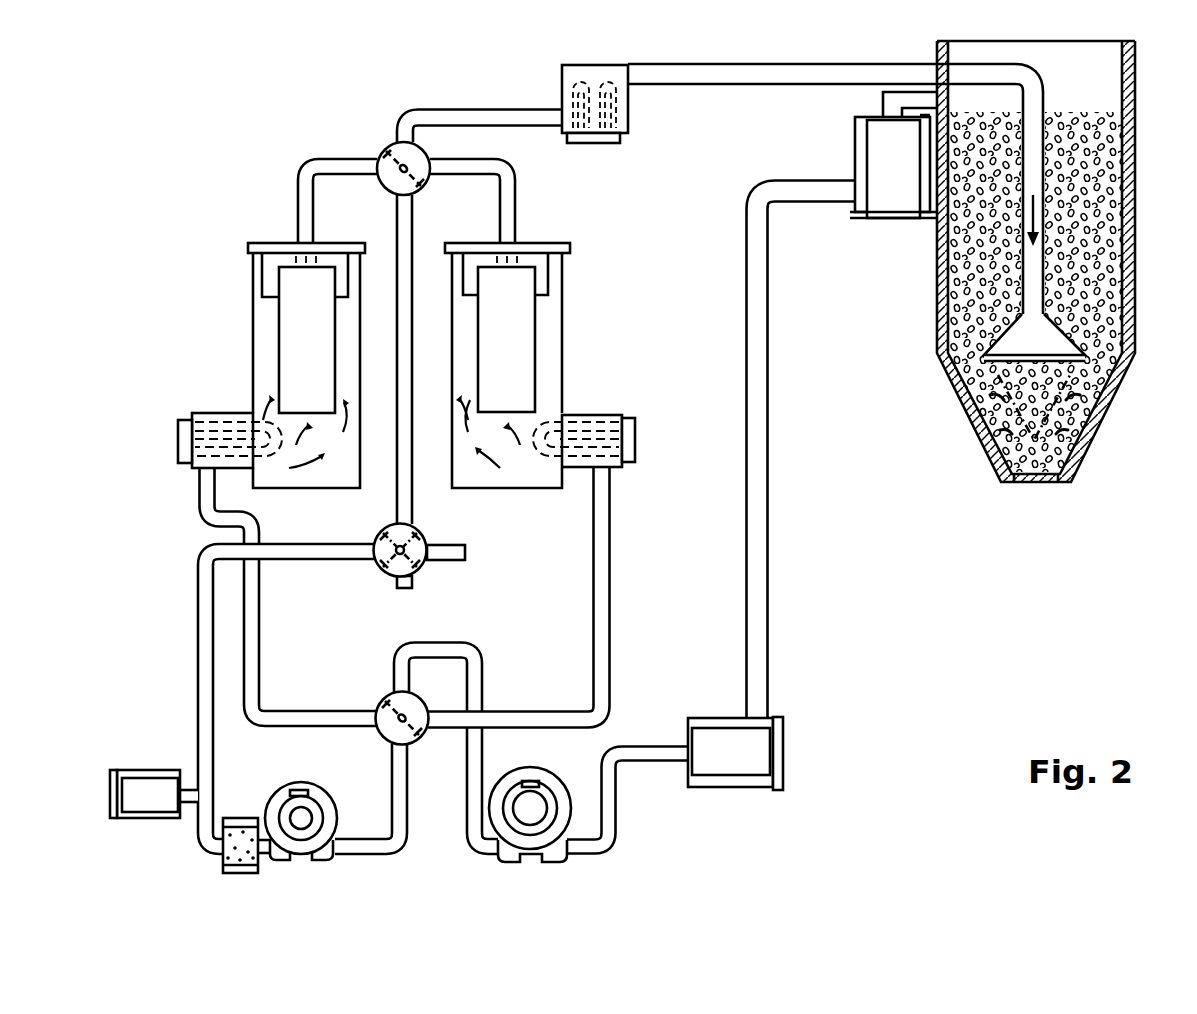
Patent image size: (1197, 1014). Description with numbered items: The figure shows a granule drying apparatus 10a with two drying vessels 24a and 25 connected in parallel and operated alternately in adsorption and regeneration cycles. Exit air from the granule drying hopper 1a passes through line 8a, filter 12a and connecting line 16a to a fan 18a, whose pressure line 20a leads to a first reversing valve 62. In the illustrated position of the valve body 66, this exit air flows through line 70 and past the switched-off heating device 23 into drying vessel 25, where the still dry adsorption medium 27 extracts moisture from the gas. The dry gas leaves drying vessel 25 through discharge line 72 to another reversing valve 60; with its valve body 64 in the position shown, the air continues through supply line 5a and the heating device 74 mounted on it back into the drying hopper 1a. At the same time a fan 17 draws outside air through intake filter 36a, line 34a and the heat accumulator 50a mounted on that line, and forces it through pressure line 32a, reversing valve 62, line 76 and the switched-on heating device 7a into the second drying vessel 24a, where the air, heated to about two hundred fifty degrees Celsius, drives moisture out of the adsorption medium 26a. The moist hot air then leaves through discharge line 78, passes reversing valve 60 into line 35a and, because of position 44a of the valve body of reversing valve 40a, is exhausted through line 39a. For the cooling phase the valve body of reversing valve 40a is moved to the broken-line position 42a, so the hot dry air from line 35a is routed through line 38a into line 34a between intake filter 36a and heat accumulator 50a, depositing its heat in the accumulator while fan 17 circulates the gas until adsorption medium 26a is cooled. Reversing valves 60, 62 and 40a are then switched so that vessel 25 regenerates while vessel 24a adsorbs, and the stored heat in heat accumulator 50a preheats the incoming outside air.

The granule drying hopper 1a is at (1135, 270).
The supply line 5a is at (848, 72).
The heating device 7a is at (190, 412).
The line 8a is at (826, 194).
The apparatus 10a is at (215, 241).
The filter 12a is at (726, 789).
The connecting line 16a is at (656, 761).
The fan 17 is at (300, 856).
The fan 18a is at (535, 854).
The pressure line 20a is at (486, 855).
The heating device 23 is at (605, 414).
The drying vessel 24a is at (261, 365).
The drying vessel 25 is at (539, 365).
The adsorption medium 26a is at (284, 350).
The adsorption medium 27 is at (528, 357).
The pressure line 32a is at (368, 856).
The line 34a is at (198, 848).
The line 35a is at (395, 497).
The intake filter 36a is at (150, 768).
The line 38a is at (198, 692).
The line 39a is at (459, 560).
The reversing valve 40a is at (409, 589).
The position of valve body 42a is at (425, 534).
The position of valve body 44a is at (372, 562).
The heat accumulator 50a is at (240, 873).
The reversing valve 60 is at (375, 143).
The reversing valve 62 is at (398, 745).
The valve body 64 is at (394, 146).
The valve body 66 is at (426, 740).
The line 70 is at (612, 706).
The discharge line 72 is at (473, 163).
The heating device 74 is at (587, 72).
The line 76 is at (260, 610).
The discharge line 78 is at (299, 188).